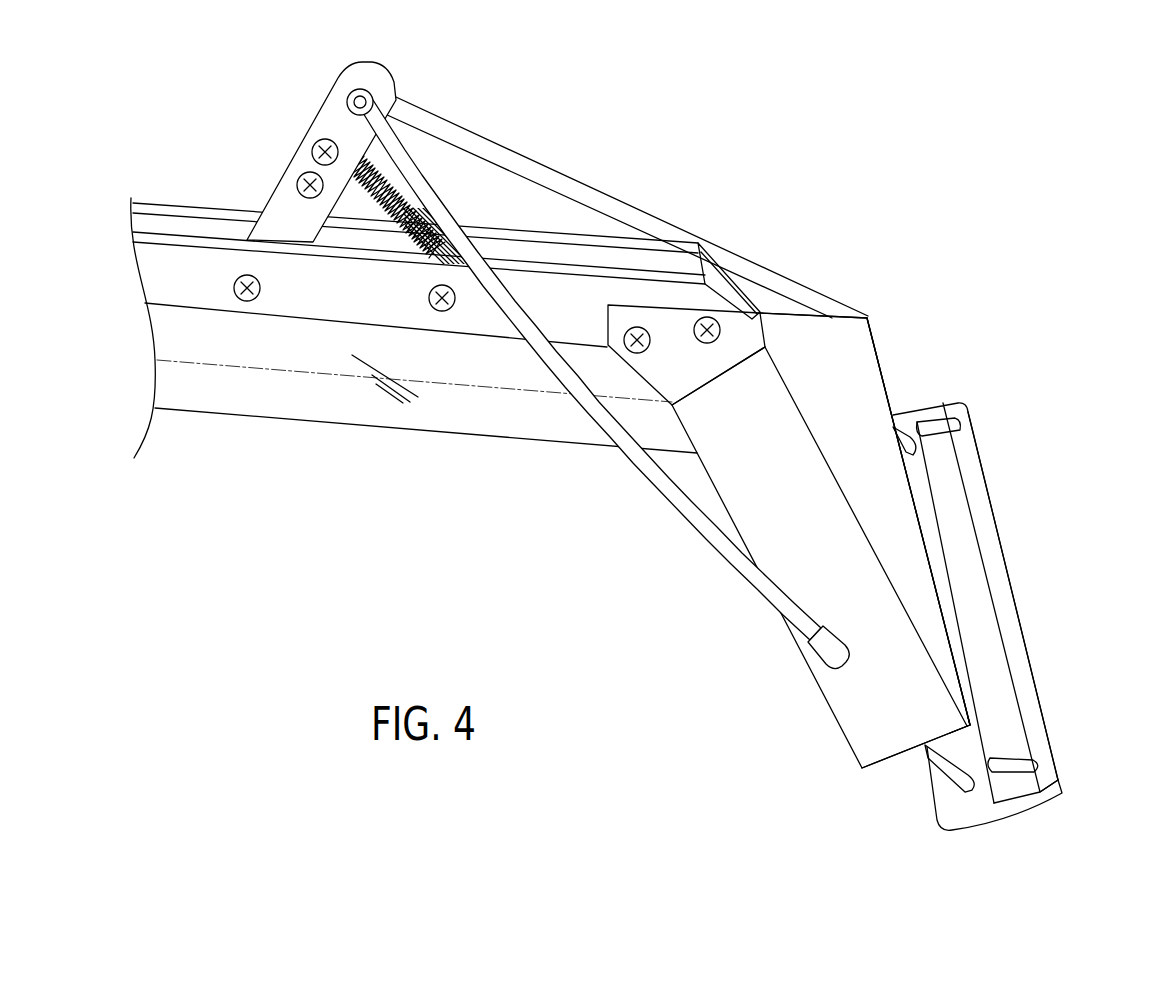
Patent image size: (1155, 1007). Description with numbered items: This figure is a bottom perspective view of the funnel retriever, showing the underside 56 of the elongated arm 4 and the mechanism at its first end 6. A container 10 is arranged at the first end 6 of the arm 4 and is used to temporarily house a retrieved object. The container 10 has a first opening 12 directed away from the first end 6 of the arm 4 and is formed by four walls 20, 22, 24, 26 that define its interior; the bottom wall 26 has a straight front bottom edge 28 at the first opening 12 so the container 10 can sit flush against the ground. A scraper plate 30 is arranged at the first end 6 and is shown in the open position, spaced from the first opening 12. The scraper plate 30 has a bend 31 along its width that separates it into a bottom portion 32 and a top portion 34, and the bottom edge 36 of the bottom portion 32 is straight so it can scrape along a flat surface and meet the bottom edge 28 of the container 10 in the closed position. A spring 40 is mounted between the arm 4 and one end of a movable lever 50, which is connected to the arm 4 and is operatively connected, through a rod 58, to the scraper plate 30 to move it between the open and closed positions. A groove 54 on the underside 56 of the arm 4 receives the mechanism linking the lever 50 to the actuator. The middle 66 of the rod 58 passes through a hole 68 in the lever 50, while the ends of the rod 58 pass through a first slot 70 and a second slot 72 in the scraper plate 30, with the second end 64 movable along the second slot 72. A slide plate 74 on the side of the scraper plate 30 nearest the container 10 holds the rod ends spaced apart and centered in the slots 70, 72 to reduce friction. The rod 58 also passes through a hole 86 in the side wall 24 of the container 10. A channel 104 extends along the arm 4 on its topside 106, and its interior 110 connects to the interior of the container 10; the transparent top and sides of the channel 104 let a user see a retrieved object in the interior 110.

The arm 4 is at (173, 253).
The first end 6 is at (660, 157).
The container 10 is at (823, 337).
The first opening 12 is at (880, 767).
The wall 20 is at (813, 685).
The side wall 22 is at (810, 311).
The side wall 24 is at (822, 498).
The bottom wall 26 is at (833, 353).
The front bottom edge 28 is at (882, 375).
The scraper plate 30 is at (960, 540).
The bend 31 is at (1007, 567).
The bottom portion 32 is at (1053, 795).
The top portion 34 is at (1010, 822).
The bottom edge 36 is at (1027, 637).
The spring 40 is at (404, 262).
The lever 50 is at (292, 200).
The groove 54 is at (177, 157).
The underside 56 is at (580, 240).
The rod 58 is at (680, 513).
The second end 64 is at (950, 757).
The middle 66 is at (366, 93).
The hole 68 is at (336, 97).
The first slot 70 is at (937, 432).
The second slot 72 is at (1027, 760).
The slide plate 74 is at (970, 740).
The hole 86 is at (873, 653).
The channel 104 is at (470, 372).
The topside 106 is at (232, 318).
The interior 110 is at (347, 360).